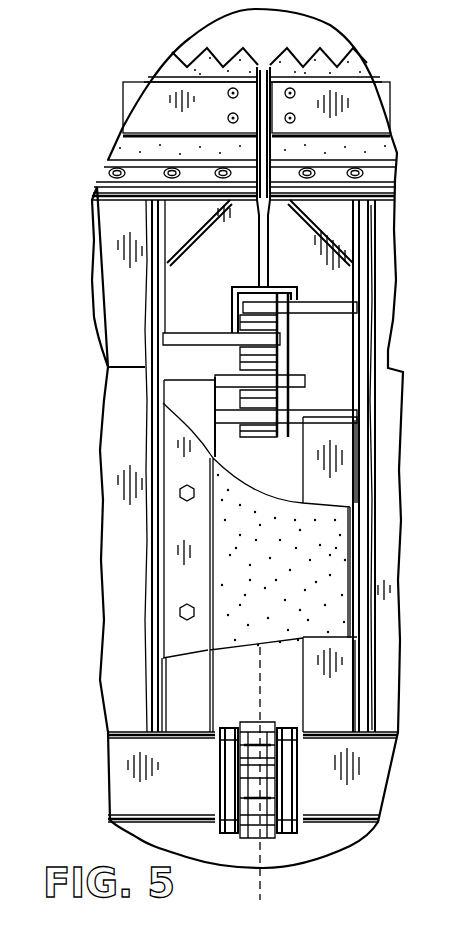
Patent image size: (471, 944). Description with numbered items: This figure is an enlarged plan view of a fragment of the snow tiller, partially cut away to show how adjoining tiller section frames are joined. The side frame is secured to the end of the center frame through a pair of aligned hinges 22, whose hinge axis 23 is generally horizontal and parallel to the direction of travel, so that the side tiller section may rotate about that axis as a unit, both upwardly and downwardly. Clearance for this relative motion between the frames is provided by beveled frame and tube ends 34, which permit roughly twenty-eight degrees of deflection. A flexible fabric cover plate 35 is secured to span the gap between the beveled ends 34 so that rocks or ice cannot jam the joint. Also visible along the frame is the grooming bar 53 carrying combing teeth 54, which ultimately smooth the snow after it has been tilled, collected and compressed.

The hinges 22 is at (290, 362).
The hinge axis 23 is at (258, 883).
The beveled frame and tube ends 34 is at (232, 795).
The flexible fabric cover plate 35 is at (330, 540).
The grooming bar 53 is at (380, 102).
The combing teeth 54 is at (367, 63).